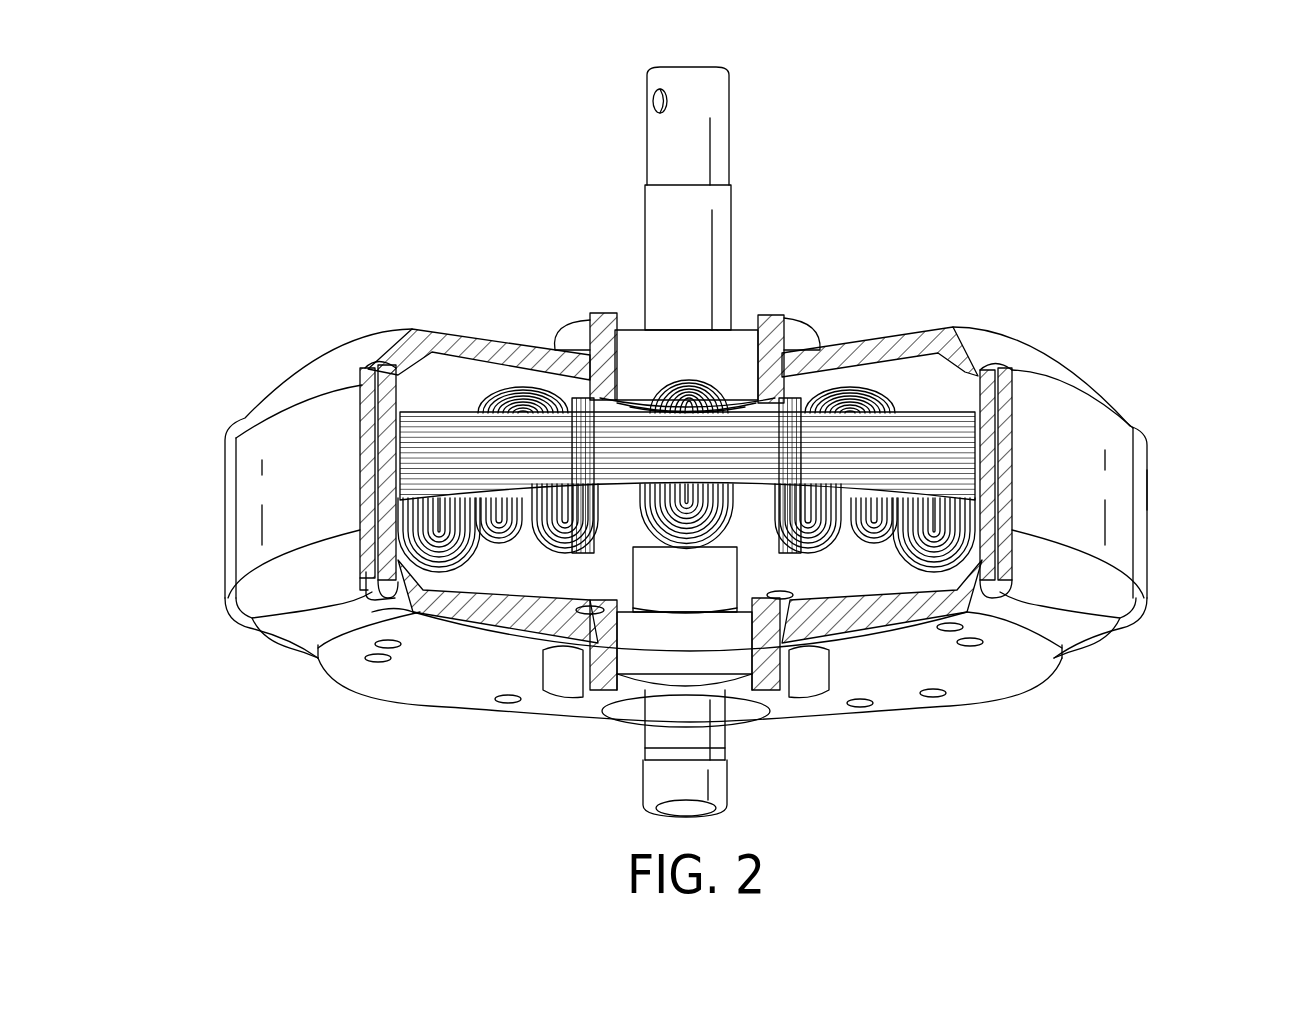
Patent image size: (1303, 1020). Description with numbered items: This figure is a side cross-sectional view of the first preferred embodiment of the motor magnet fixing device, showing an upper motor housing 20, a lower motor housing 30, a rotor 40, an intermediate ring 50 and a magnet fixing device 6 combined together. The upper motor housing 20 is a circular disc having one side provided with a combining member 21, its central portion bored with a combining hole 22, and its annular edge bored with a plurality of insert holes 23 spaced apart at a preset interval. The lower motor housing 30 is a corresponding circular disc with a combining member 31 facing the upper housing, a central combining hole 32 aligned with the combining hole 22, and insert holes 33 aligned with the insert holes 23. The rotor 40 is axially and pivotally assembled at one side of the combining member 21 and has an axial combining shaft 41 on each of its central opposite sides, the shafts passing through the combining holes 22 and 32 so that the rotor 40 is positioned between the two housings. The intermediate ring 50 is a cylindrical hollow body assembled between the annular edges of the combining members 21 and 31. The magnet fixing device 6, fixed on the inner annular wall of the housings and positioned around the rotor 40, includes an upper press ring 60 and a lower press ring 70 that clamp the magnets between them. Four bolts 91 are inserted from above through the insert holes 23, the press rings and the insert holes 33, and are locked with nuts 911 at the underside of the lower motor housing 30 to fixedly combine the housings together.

The upper motor housing 20 is at (1017, 330).
The combining member 21 is at (885, 335).
The combining hole 22 is at (768, 314).
The insert holes 23 is at (1020, 382).
The lower motor housing 30 is at (1088, 664).
The combining member 31 is at (840, 612).
The combining hole 32 is at (765, 640).
The insert holes 33 is at (1010, 530).
The rotor 40 is at (628, 93).
The axial combining shaft 41 is at (665, 243).
The intermediate ring 50 is at (1162, 490).
The magnet fixing device 6 is at (355, 445).
The upper press ring 60 is at (355, 425).
The lower press ring 70 is at (355, 500).
The bolts 91 is at (370, 540).
The nuts 911 is at (370, 575).